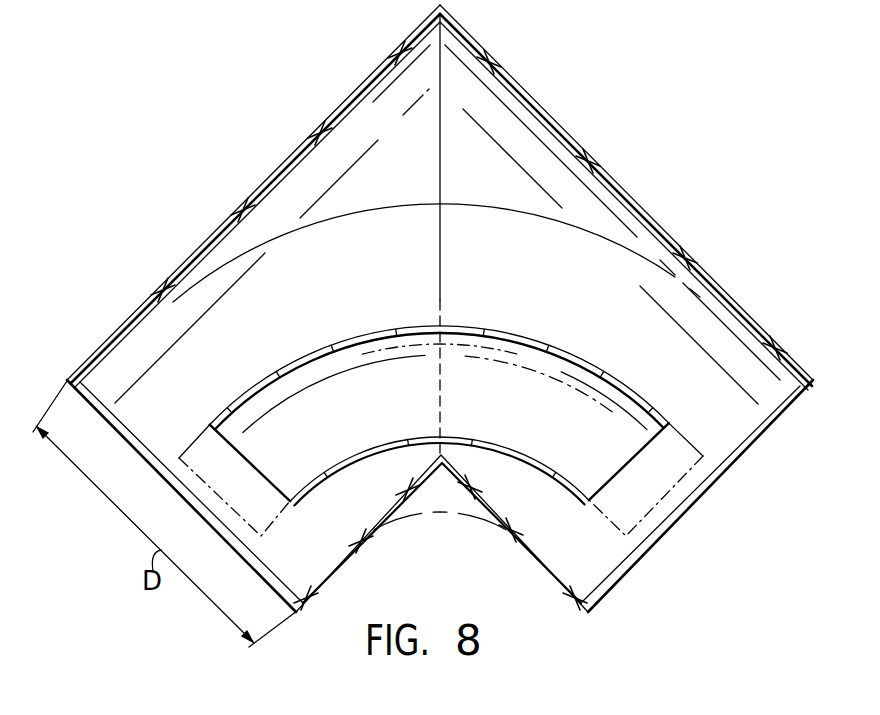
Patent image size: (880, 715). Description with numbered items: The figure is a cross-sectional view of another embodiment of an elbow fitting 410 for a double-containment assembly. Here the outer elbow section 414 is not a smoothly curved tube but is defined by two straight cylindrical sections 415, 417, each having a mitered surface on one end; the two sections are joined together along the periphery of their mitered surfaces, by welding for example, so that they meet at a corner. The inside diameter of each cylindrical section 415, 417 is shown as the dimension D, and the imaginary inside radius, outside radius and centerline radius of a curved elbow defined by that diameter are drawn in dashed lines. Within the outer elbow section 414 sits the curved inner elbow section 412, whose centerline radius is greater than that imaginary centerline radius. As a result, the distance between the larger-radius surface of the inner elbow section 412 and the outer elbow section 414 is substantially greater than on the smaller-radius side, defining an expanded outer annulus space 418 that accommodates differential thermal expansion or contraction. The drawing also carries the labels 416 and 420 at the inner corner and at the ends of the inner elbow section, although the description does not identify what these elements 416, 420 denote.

The elbow fitting 410 is at (578, 110).
The inner elbow section 412 is at (507, 325).
The outer elbow section 414 is at (628, 194).
The straight cylindrical section 415 is at (283, 167).
The inner edge flange 416 is at (398, 463).
The straight cylindrical section 417 is at (707, 270).
The expanded outer annulus space 418 is at (393, 122).
The end coupling region 420 is at (202, 427).